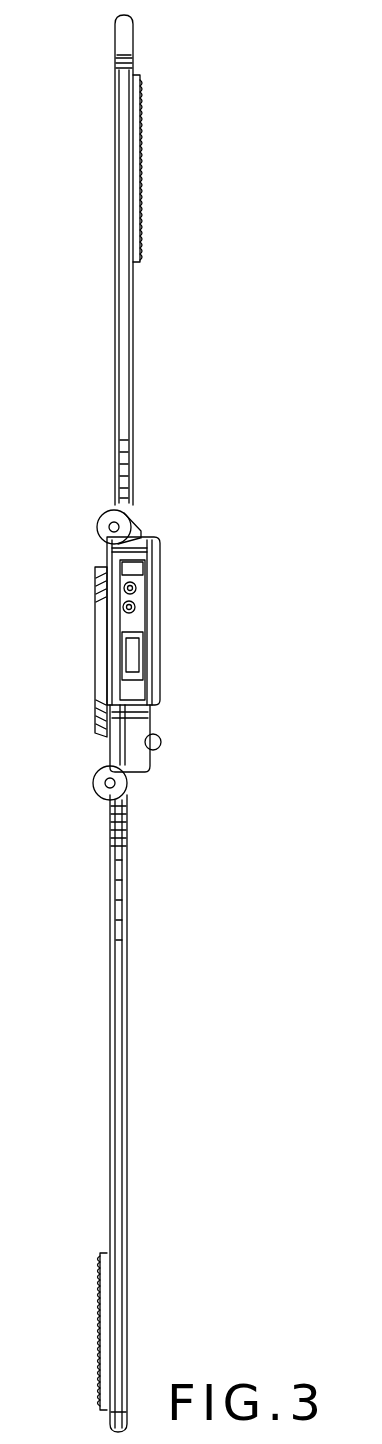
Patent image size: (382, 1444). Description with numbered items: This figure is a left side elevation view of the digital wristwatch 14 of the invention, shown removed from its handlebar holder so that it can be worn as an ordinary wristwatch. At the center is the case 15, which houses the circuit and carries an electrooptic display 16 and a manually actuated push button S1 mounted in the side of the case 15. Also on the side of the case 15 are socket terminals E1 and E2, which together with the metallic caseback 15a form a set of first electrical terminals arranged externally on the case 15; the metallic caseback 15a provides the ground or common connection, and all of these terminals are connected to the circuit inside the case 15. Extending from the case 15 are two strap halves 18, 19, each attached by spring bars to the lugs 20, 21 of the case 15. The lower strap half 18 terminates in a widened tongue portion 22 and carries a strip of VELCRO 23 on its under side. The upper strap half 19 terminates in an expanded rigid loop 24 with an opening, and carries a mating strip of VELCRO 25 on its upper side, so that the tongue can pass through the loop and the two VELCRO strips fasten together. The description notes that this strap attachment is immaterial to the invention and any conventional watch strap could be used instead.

The digital wristwatch 14 is at (170, 480).
The case 15 is at (147, 548).
The metallic caseback 15a is at (95, 650).
The electrooptic display 16 is at (160, 640).
The strap half 18 is at (118, 1018).
The strap half 19 is at (133, 370).
The lug 20 is at (123, 786).
The lug 21 is at (98, 527).
The widened tongue portion 22 is at (112, 1422).
The strip of VELCRO 23 is at (100, 1316).
The expanded rigid loop 24 is at (132, 42).
The mating strip of VELCRO 25 is at (141, 178).
The socket terminal E1 is at (136, 608).
The socket terminal E2 is at (137, 586).
The push button S1 is at (135, 650).